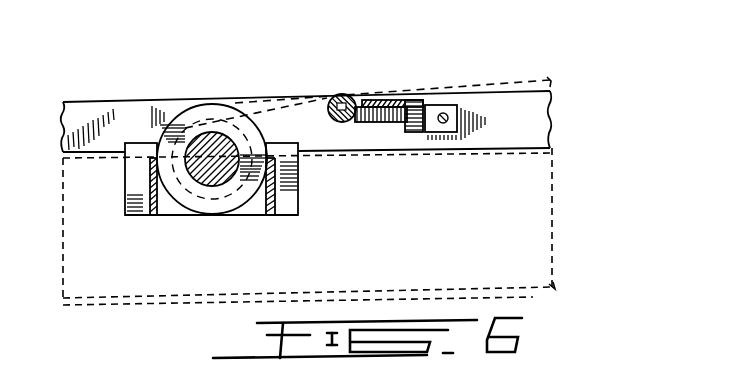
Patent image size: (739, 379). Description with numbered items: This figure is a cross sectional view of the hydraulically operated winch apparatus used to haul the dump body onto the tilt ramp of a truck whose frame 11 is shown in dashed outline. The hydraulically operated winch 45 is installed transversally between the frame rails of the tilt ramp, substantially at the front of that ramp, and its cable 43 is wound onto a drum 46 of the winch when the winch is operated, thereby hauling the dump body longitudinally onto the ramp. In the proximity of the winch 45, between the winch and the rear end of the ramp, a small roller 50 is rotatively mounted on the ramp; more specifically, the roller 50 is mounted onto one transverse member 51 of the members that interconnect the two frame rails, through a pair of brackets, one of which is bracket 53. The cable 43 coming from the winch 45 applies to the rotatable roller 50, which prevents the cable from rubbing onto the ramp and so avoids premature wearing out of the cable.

The frame 11 is at (555, 290).
The cable 43 is at (380, 83).
The hydraulically operated winch 45 is at (178, 202).
The drum 46 is at (218, 176).
The roller 50 is at (343, 123).
The transverse member 51 is at (407, 133).
The bracket 53 is at (381, 114).